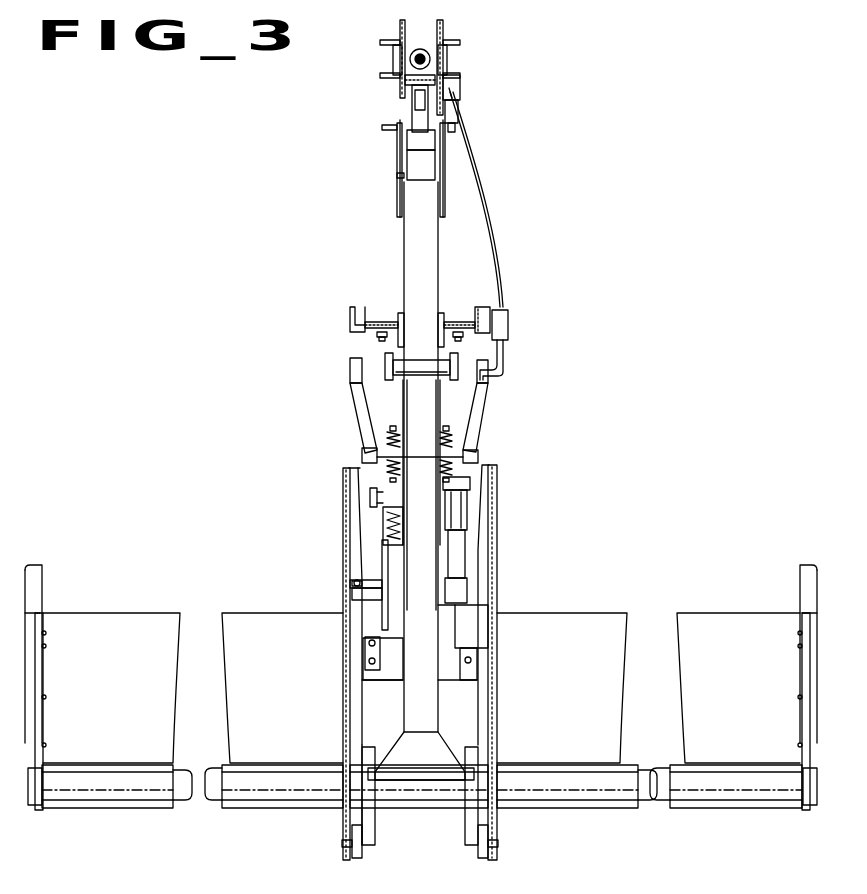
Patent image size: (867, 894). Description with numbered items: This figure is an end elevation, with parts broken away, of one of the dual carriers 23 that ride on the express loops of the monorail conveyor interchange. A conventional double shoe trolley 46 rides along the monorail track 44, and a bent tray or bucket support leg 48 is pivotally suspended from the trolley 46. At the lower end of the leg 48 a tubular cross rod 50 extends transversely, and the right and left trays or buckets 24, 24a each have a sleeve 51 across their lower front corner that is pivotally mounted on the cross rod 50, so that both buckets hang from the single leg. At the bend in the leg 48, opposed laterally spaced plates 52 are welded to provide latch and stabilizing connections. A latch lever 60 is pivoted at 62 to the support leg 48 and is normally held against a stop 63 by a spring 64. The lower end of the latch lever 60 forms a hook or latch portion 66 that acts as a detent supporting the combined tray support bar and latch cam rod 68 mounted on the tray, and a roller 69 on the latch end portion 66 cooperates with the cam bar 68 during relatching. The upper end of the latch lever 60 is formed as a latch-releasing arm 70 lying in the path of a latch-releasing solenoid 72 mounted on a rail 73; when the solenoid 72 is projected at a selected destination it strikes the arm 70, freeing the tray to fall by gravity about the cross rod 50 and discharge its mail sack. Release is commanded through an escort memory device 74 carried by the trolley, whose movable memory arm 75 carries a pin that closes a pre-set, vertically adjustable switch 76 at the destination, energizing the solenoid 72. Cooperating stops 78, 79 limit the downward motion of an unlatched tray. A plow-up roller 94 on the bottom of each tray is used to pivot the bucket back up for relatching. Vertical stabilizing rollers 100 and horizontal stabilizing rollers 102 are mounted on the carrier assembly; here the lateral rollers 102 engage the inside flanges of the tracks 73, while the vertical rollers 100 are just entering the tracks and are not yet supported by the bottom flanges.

The carrier 23 is at (622, 200).
The monorail track 44 is at (455, 32).
The double shoe trolley 46 is at (400, 175).
The tray or bucket support leg 48 is at (407, 243).
The tubular cross rod 50 is at (208, 798).
The sleeve 51 is at (262, 767).
The plates 52 is at (437, 422).
The latch lever 60 is at (485, 403).
The pivot 62 is at (370, 493).
The stop 63 is at (362, 453).
The spring 64 is at (450, 443).
The hook or latch portion 66 is at (383, 615).
The combined tray support bar and latch cam rod 68 is at (360, 580).
The roller 69 is at (362, 598).
The latch-releasing arm 70 is at (352, 368).
The latch-releasing solenoid 72 is at (503, 325).
The rail 73 is at (488, 306).
The escort memory device 74 is at (397, 157).
The memory arm 75 is at (390, 128).
The switch 76 is at (460, 85).
The stop 78 is at (482, 628).
The stop 79 is at (473, 658).
The plow-up roller 94 is at (477, 855).
The vertical stabilizing rollers 100 is at (387, 357).
The horizontal stabilizing rollers 102 is at (457, 323).
The tray or bucket 24 is at (242, 622).
The tray or bucket 24a is at (705, 622).